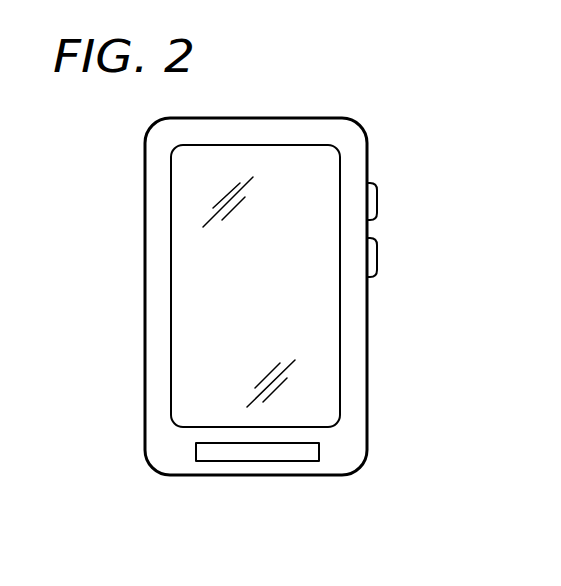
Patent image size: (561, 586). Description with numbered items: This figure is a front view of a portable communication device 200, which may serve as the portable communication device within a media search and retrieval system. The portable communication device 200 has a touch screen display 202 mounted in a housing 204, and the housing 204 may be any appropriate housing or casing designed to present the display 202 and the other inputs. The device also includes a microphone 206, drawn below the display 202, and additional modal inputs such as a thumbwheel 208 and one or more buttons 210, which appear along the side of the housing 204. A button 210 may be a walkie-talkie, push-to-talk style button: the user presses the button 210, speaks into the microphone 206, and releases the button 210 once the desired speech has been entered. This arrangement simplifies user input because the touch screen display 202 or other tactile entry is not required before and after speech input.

The portable communication device 200 is at (393, 118).
The touch screen display 202 is at (188, 204).
The housing 204 is at (158, 290).
The microphone 206 is at (196, 451).
The thumbwheel 208 is at (378, 201).
The button 210 is at (378, 258).